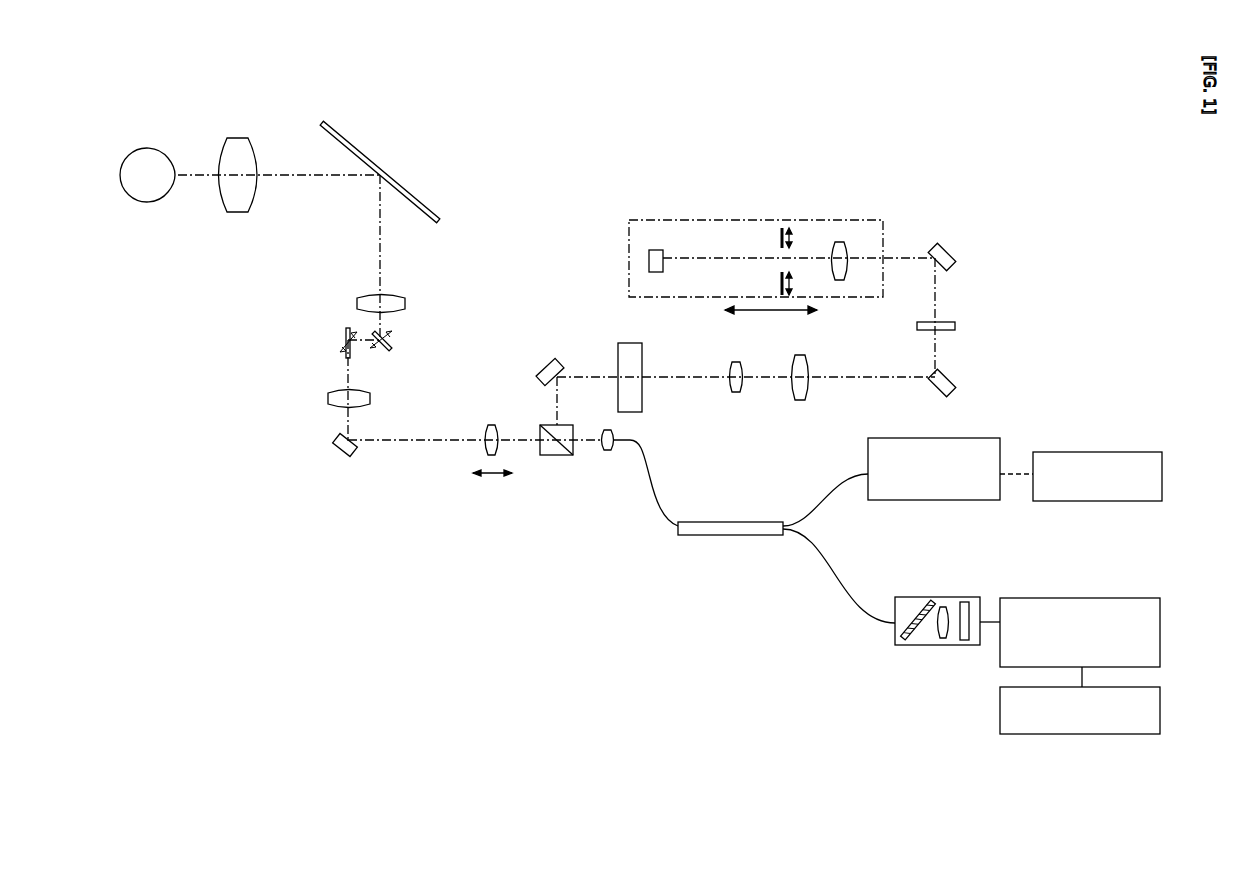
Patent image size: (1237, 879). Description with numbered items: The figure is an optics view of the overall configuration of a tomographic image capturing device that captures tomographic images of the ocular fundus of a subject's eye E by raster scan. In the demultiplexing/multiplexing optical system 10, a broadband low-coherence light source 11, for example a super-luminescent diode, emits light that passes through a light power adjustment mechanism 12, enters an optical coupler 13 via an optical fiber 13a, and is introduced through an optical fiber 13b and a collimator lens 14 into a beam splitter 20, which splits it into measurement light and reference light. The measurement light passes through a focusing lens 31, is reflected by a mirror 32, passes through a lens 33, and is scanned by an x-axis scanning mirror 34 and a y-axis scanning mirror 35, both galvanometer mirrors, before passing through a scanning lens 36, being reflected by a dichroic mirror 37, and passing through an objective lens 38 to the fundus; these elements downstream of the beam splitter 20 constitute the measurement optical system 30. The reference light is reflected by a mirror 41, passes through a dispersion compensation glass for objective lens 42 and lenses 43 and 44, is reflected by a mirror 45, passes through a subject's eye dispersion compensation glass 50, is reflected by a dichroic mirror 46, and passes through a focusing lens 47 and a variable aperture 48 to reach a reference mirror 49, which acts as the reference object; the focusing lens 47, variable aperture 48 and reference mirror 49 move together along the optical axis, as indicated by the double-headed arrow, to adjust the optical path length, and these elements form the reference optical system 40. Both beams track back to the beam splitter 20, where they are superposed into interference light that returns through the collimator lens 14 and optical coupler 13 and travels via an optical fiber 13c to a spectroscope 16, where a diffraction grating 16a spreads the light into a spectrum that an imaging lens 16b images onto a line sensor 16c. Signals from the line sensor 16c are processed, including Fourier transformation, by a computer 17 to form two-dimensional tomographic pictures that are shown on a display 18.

The subject's eye E is at (158, 150).
The demultiplexing/multiplexing optical system 10 is at (731, 597).
The low-coherence light source 11 is at (1062, 501).
The light power adjustment mechanism 12 is at (882, 500).
The optical coupler 13 is at (730, 522).
The optical fiber 13a is at (815, 510).
The optical fiber 13b is at (655, 495).
The optical fiber 13c is at (826, 560).
The collimator lens 14 is at (608, 450).
The spectroscope 16 is at (947, 621).
The diffraction grating 16a is at (930, 600).
The imaging lens 16b is at (943, 638).
The line sensor 16c is at (964, 600).
The computer 17 is at (1118, 598).
The display 18 is at (1045, 734).
The beam splitter 20 is at (553, 455).
The measurement optical system 30 is at (414, 478).
The focusing lens 31 is at (492, 425).
The mirror 32 is at (338, 455).
The lens 33 is at (370, 400).
The x-axis scanning mirror 34 is at (345, 340).
The y-axis scanning mirror 35 is at (393, 348).
The scanning lens 36 is at (405, 305).
The dichroic mirror 37 is at (402, 186).
The objective lens 38 is at (240, 212).
The reference optical system 40 is at (744, 190).
The mirror 41 is at (550, 360).
The dispersion compensation glass for objective lens 42 is at (620, 343).
The lens 43 is at (736, 392).
The lens 44 is at (805, 358).
The mirror 45 is at (955, 372).
The dichroic mirror 46 is at (942, 243).
The focusing lens 47 is at (838, 242).
The variable aperture 48 is at (783, 226).
The reference mirror 49 is at (657, 250).
The subject's eye dispersion compensation glass 50 is at (915, 327).